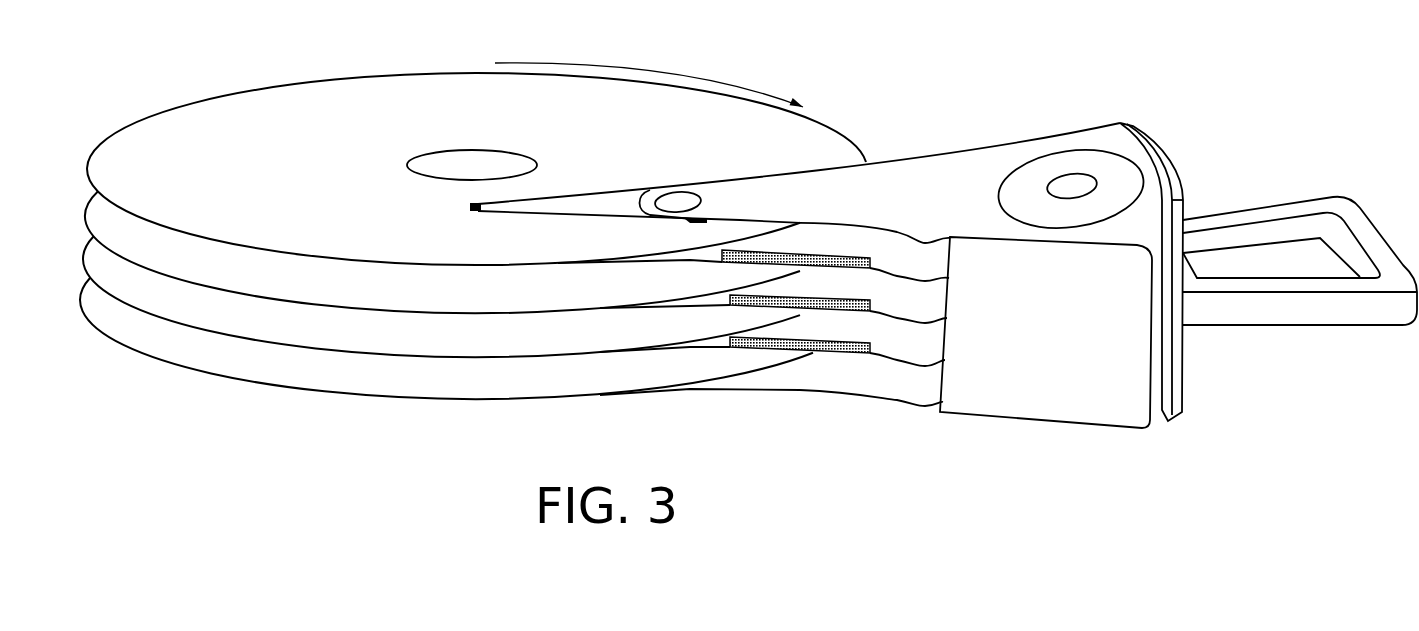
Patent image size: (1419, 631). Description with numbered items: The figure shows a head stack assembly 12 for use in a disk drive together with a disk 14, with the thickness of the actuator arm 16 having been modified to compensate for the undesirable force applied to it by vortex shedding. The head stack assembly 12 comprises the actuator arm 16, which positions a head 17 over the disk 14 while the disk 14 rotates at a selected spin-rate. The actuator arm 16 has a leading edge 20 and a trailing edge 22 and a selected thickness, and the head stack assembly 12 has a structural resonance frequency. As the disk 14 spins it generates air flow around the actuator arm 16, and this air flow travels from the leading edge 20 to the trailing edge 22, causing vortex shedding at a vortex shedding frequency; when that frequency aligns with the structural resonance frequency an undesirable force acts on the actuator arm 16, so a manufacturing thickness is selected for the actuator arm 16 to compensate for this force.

The head stack assembly 12 is at (946, 103).
The disk 14 is at (210, 106).
The actuator arm 16 is at (923, 243).
The head 17 is at (478, 212).
The leading edge 20 is at (895, 170).
The trailing edge 22 is at (899, 229).